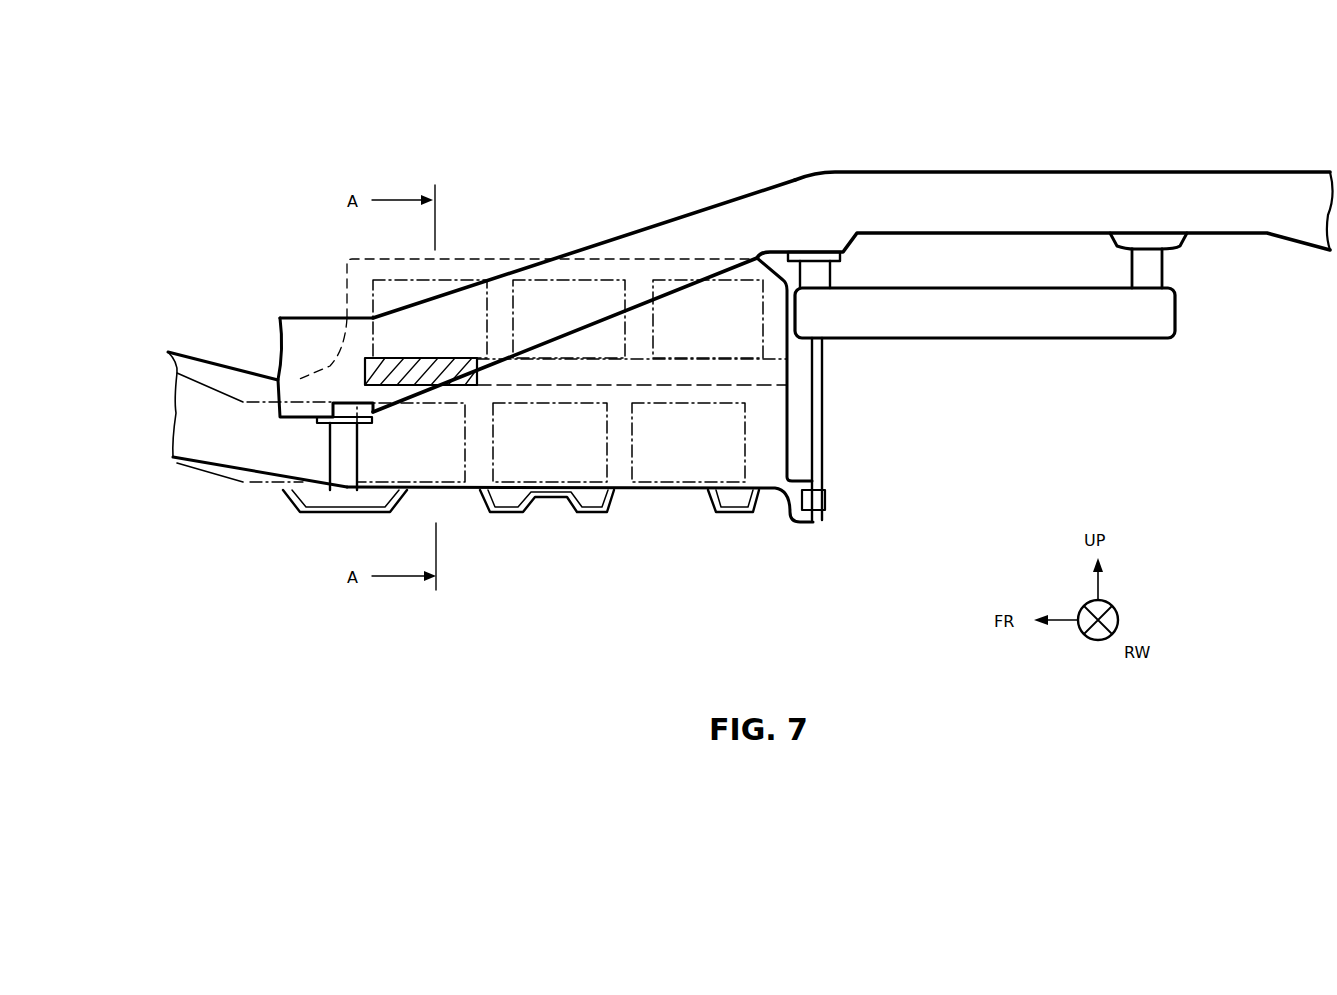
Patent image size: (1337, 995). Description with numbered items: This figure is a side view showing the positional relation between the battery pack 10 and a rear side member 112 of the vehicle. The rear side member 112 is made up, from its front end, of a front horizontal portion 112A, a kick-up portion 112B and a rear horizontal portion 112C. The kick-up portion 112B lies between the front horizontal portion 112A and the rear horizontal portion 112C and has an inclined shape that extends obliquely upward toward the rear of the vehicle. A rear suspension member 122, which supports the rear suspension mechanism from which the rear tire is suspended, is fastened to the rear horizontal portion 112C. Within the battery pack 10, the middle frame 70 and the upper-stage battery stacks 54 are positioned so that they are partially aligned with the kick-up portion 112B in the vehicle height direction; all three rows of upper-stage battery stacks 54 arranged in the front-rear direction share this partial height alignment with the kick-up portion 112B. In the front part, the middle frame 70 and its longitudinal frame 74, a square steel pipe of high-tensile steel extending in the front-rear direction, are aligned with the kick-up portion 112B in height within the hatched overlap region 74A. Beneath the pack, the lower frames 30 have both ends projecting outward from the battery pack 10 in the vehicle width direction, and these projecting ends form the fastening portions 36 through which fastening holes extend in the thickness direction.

The battery pack 10 is at (345, 262).
The front horizontal portion 112A is at (307, 333).
The kick-up portion 112B is at (667, 232).
The rear side member 112 is at (819, 176).
The rear horizontal portion 112C is at (937, 185).
The upper-stage battery stack 54 is at (444, 290).
The overlap region 74A is at (424, 386).
The middle frame 70 is at (788, 407).
The longitudinal frame 74 is at (716, 429).
The fastening portion 36 is at (821, 466).
The rear suspension member 122 is at (1082, 322).
The lower frame 30 is at (510, 516).